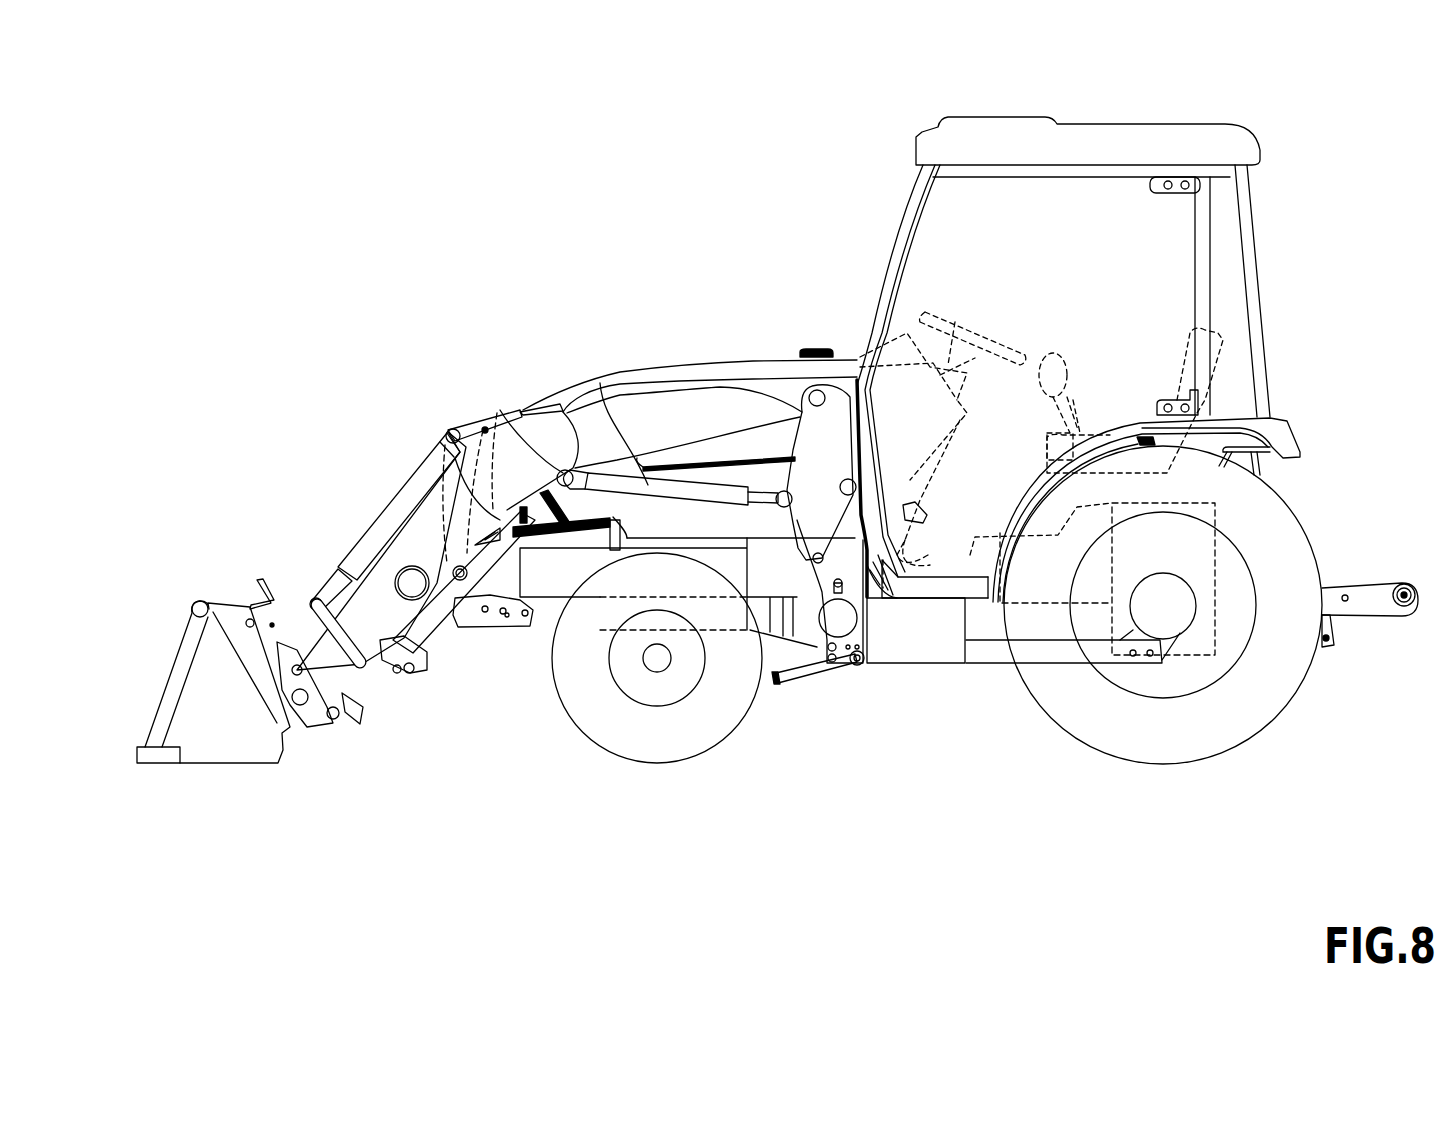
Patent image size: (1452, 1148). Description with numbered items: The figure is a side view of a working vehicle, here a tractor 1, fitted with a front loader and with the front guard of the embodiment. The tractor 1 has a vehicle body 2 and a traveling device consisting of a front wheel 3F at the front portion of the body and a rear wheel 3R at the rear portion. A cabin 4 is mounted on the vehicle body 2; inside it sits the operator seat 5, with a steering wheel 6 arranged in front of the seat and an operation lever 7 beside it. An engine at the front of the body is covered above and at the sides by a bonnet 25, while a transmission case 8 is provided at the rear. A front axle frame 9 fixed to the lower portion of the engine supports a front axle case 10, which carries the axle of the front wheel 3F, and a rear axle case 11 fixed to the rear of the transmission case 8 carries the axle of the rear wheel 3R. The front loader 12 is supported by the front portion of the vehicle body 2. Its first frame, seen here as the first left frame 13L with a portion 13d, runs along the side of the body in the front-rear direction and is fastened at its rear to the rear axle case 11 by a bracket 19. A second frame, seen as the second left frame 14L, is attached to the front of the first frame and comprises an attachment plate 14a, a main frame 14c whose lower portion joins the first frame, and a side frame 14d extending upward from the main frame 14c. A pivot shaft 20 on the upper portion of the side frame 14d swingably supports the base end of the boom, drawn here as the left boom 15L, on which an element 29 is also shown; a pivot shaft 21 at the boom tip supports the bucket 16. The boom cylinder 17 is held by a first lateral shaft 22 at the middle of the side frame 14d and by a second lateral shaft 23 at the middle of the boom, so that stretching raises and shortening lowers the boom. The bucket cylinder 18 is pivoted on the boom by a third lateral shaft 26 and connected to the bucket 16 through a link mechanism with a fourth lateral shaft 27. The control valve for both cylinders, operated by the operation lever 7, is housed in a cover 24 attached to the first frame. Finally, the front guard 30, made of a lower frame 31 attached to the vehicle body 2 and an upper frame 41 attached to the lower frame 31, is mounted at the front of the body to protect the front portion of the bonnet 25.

The tractor 1 is at (662, 207).
The vehicle body 2 is at (535, 634).
The front wheel 3F is at (672, 765).
The rear wheel 3R is at (1240, 749).
The cabin 4 is at (997, 117).
The operator seat 5 is at (1183, 340).
The steering wheel 6 is at (935, 310).
The operation lever 7 is at (1052, 352).
The transmission case 8 is at (1037, 605).
The front axle frame 9 is at (592, 630).
The front axle case 10 is at (655, 672).
The rear axle case 11 is at (1189, 621).
The front loader 12 is at (527, 403).
The first left frame 13L is at (1069, 665).
The frame mounting portion 13d is at (1147, 663).
The second left frame 14L is at (799, 410).
The attachment plate 14a is at (783, 632).
The main frame 14c is at (817, 585).
The side frame 14d is at (840, 385).
The left link member 15L is at (700, 458).
The bucket 16 is at (211, 765).
The boom cylinder 17 is at (600, 383).
The bucket cylinder 18 is at (367, 530).
The bracket 19 is at (1170, 663).
The pivot shaft 20 is at (807, 390).
The pivot shaft 21 is at (343, 724).
The first lateral shaft 22 is at (753, 458).
The second lateral shaft 23 is at (503, 405).
The cover 24 is at (933, 665).
The bonnet 25 is at (567, 397).
The third lateral shaft 26 is at (448, 428).
The fourth lateral shaft 27 is at (296, 663).
The boom ring 29 is at (413, 565).
The front guard 30 is at (459, 632).
The lower frame 31 is at (479, 628).
The upper frame 41 is at (480, 405).